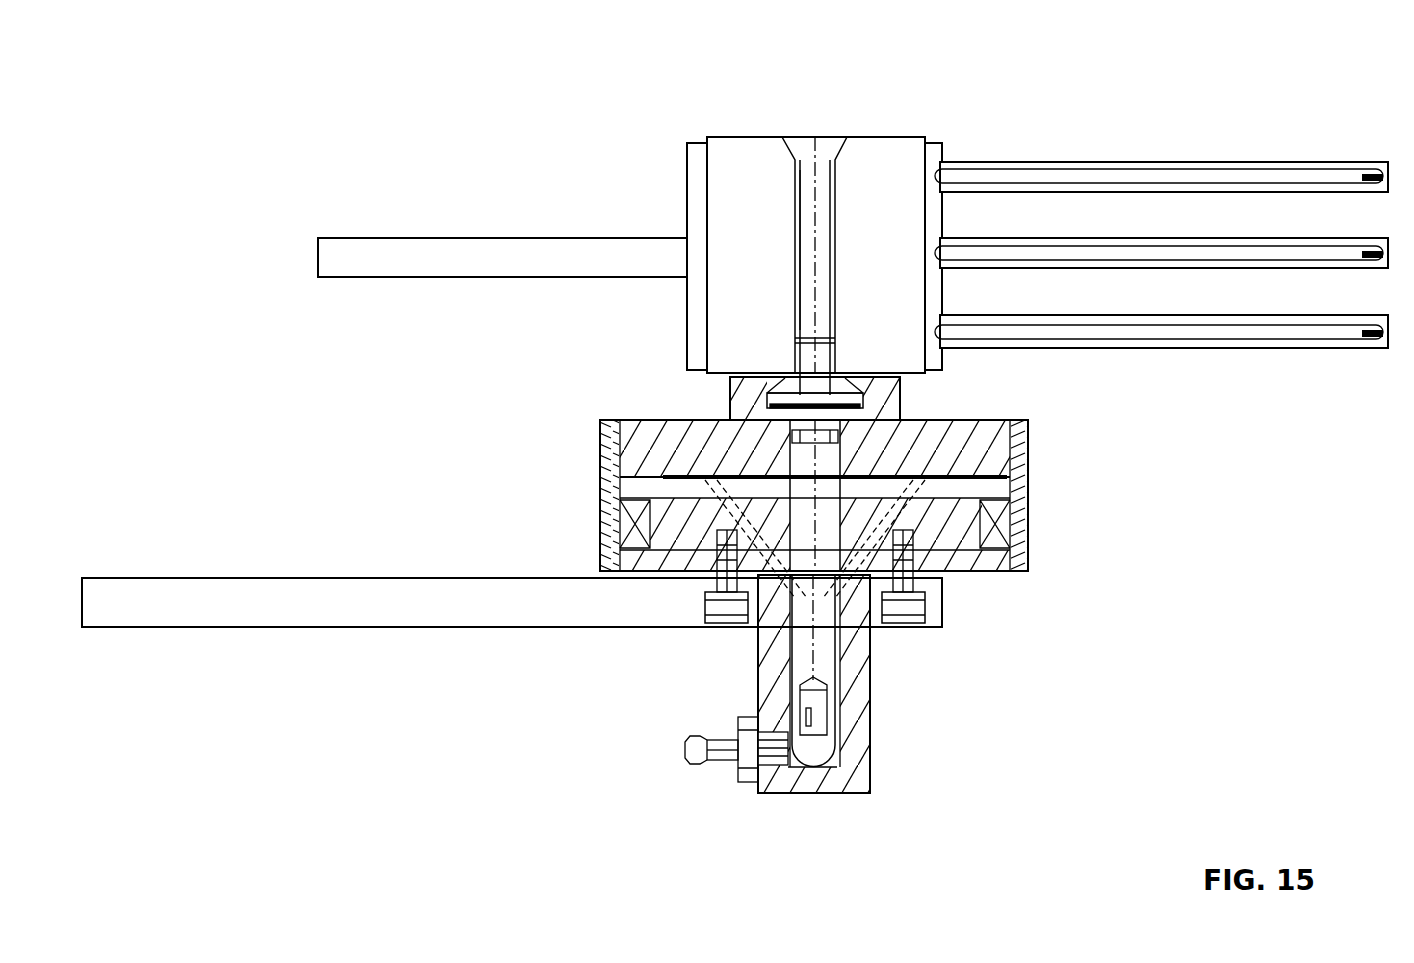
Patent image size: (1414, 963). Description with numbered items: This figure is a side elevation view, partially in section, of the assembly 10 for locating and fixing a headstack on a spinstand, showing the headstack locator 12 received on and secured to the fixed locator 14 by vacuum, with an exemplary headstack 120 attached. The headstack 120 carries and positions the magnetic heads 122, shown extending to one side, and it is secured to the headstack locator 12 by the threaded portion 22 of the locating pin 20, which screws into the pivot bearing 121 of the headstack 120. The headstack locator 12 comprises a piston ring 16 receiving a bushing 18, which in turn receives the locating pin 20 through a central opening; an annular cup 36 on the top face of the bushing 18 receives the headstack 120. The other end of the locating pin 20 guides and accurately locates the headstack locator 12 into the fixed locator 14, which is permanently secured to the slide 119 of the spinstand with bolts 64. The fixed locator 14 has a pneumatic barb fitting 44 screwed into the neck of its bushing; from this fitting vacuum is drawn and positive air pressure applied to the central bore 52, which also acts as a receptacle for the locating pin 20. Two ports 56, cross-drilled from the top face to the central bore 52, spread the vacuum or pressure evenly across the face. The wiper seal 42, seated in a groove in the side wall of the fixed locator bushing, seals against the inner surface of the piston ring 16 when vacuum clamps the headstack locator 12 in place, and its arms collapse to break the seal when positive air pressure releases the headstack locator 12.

The assembly 10 is at (573, 457).
The headstack locator 12 is at (1032, 458).
The fixed locator 14 is at (880, 702).
The piston ring 16 is at (1030, 500).
The bushing 18 is at (982, 422).
The locating pin 20 is at (803, 653).
The threaded portion 22 is at (827, 357).
The annular cup 36 is at (747, 387).
The wiper seal 42 is at (1030, 525).
The pneumatic barb fitting 44 is at (728, 763).
The central bore 52 is at (840, 747).
The ports 56 is at (753, 493).
The bolts 64 is at (722, 625).
The slide 119 is at (173, 578).
The headstack 120 is at (700, 167).
The pivot bearing 121 is at (781, 333).
The magnetic heads 122 is at (1368, 160).